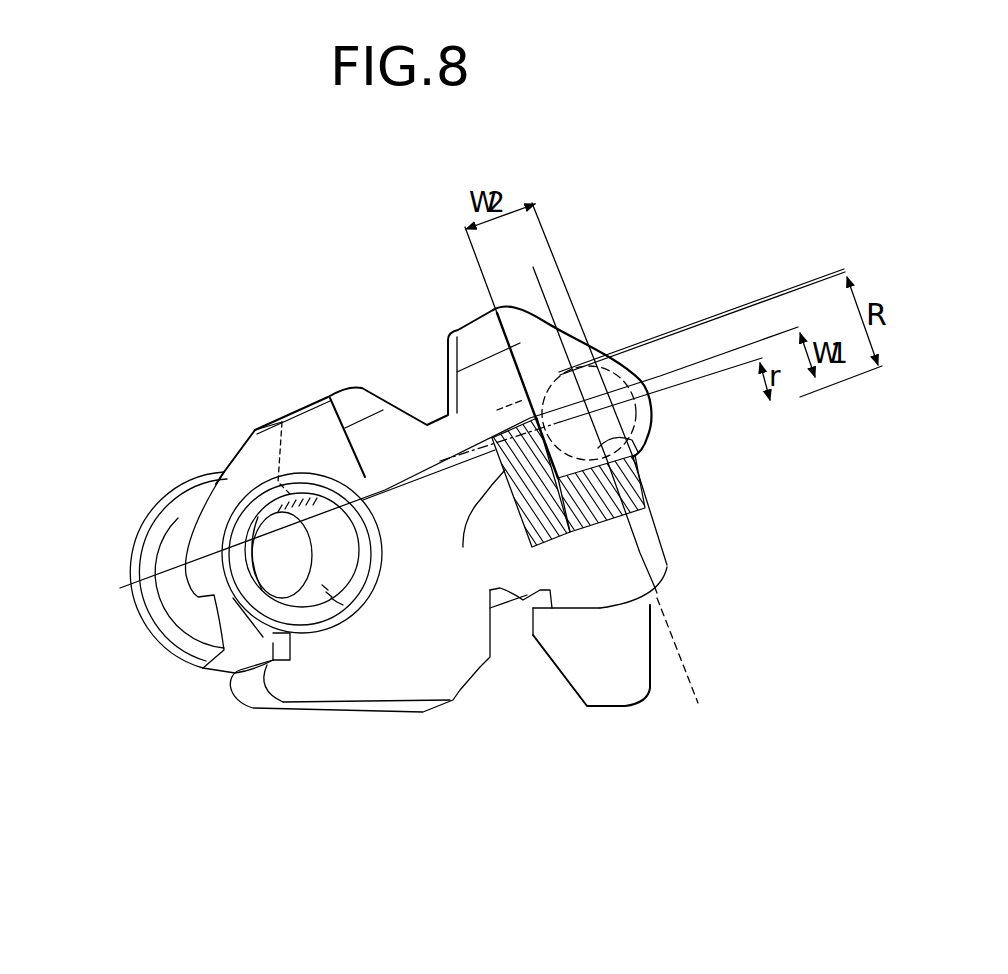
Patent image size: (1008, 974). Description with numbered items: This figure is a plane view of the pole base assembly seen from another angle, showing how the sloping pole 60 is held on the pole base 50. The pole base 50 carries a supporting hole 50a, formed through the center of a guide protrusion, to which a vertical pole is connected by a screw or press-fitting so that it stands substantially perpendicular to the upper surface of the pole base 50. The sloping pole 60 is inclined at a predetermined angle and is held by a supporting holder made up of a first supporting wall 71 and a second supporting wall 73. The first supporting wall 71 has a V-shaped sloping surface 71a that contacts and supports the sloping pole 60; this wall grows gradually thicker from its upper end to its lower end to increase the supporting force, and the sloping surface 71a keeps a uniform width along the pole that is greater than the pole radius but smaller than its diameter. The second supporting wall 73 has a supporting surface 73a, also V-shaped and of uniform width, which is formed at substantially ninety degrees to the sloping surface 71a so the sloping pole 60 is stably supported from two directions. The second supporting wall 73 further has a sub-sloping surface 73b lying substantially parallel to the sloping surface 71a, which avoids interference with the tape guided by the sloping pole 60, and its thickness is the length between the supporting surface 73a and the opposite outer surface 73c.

The pole base 50 is at (307, 683).
The supporting hole 50a is at (262, 557).
The sloping pole 60 is at (640, 366).
The first supporting wall 71 is at (463, 547).
The sloping surface 71a is at (545, 541).
The second supporting wall 73 is at (614, 512).
The supporting surface 73a is at (645, 438).
The sub-sloping surface 73b is at (647, 482).
The outer surface 73c is at (583, 527).